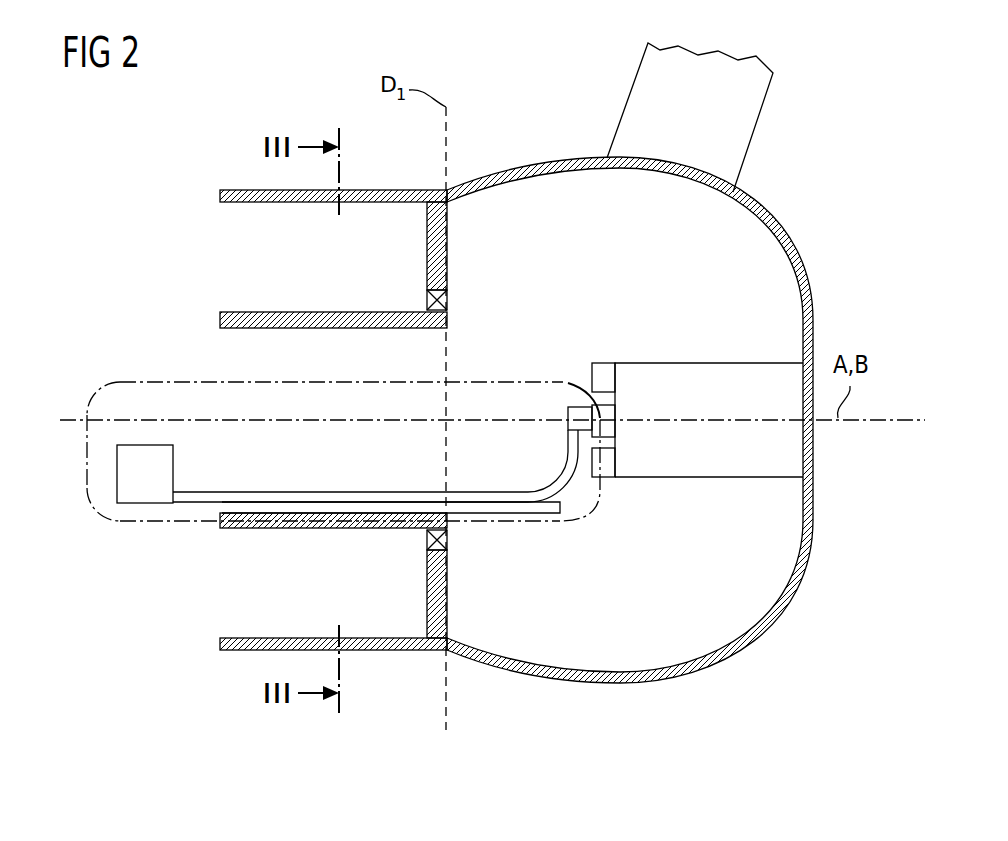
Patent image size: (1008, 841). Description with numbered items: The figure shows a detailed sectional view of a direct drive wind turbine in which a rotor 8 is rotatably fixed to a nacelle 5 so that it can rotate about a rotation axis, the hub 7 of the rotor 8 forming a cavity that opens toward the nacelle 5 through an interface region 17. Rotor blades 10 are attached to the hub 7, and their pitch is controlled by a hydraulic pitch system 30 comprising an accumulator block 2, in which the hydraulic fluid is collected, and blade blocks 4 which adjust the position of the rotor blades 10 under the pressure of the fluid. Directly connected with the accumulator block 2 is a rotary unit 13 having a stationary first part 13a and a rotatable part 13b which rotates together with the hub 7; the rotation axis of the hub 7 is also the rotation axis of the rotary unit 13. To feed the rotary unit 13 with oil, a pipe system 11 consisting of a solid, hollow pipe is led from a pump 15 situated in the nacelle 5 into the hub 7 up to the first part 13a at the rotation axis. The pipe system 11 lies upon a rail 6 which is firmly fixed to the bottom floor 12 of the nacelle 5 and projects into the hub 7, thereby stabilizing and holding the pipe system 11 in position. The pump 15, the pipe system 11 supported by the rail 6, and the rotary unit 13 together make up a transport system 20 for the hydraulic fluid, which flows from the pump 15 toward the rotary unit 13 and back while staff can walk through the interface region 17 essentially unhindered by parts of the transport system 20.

The accumulator block 2 is at (712, 362).
The blade blocks 4 is at (604, 372).
The nacelle 5 is at (370, 651).
The rail 6 is at (530, 508).
The hub 7 is at (770, 212).
The rotor 8 is at (635, 386).
The rotor blades 10 is at (643, 105).
The pipe system 11 is at (568, 442).
The bottom floor 12 is at (281, 510).
The rotary unit 13 is at (584, 386).
The first part 13a is at (568, 414).
The rotatable part 13b is at (613, 411).
The pump 15 is at (172, 470).
The interface region 17 is at (464, 364).
The transport system 20 is at (160, 380).
The hydraulic pitch system 30 is at (703, 492).